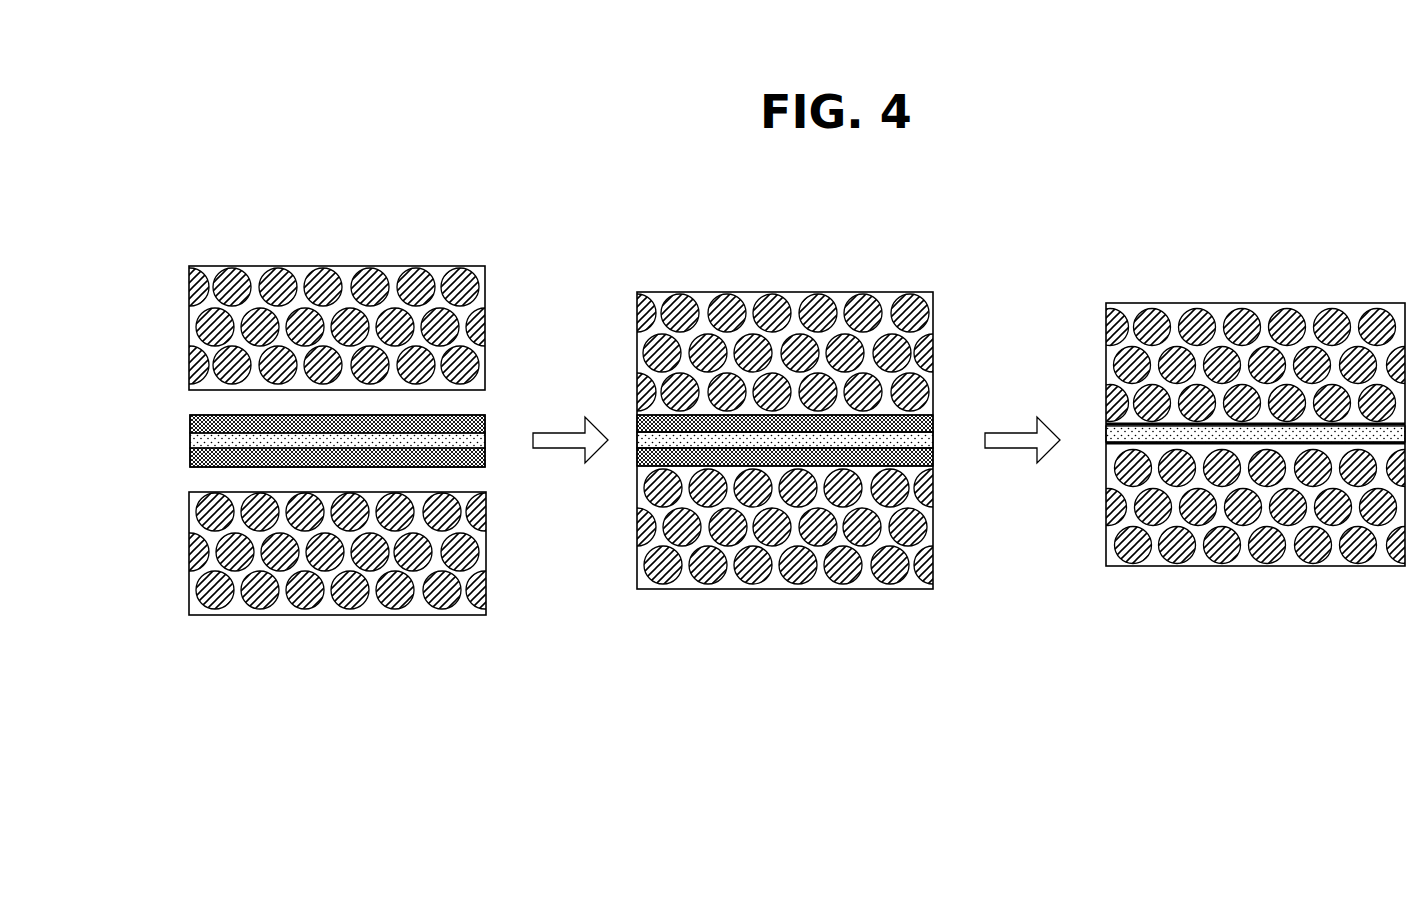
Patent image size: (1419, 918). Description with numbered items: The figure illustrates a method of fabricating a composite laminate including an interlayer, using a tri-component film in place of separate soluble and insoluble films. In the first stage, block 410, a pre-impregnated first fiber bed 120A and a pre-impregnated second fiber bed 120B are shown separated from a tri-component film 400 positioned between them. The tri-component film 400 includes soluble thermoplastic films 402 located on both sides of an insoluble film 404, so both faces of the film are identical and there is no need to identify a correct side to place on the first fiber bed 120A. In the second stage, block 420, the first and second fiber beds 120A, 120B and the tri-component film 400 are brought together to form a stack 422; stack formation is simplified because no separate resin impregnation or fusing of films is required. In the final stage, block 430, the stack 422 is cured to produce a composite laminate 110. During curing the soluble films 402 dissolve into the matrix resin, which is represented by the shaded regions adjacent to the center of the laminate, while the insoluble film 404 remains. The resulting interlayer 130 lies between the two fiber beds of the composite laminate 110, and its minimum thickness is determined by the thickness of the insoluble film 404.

The block 410 is at (238, 230).
The block 420 is at (741, 230).
The block 430 is at (1163, 230).
The second fiber bed 120B is at (437, 272).
The first fiber bed 120A is at (425, 608).
The tri-component film 400 is at (190, 415).
The soluble thermoplastic film 402 is at (194, 419).
The insoluble film 404 is at (486, 440).
The stack 422 is at (883, 289).
The composite laminate 110 is at (1307, 300).
The interlayer 130 is at (1097, 434).